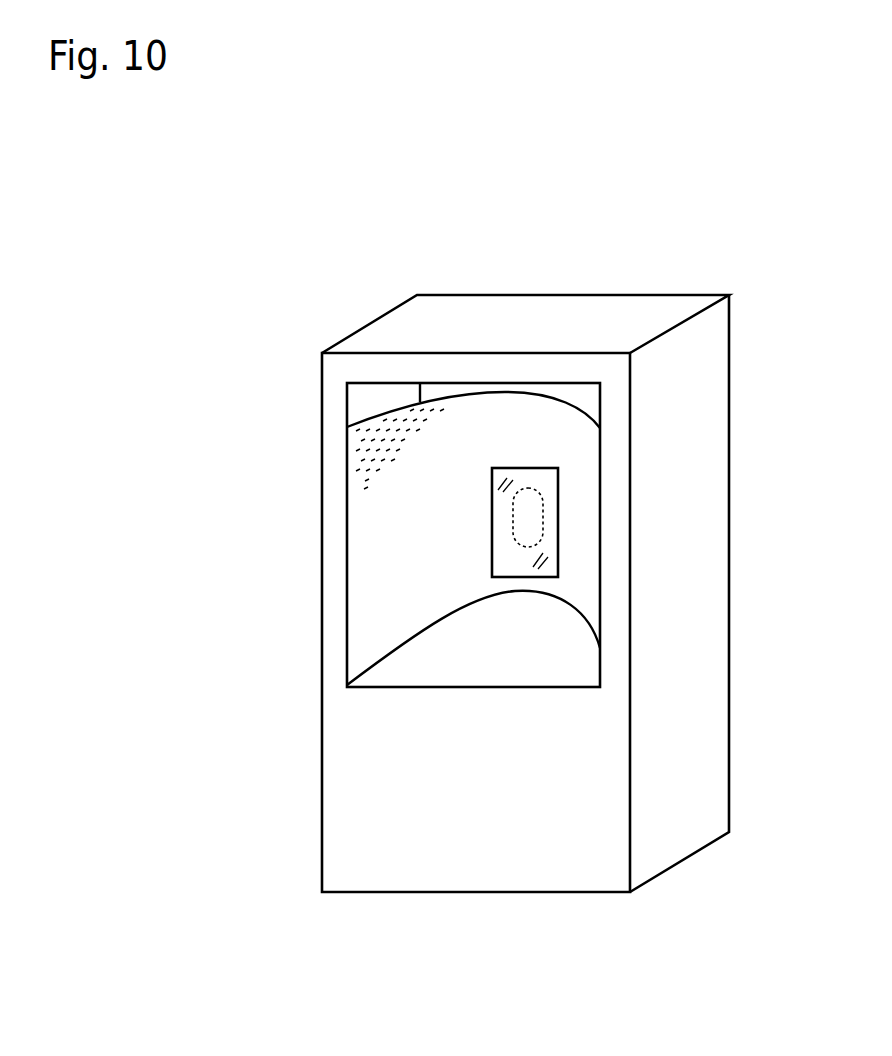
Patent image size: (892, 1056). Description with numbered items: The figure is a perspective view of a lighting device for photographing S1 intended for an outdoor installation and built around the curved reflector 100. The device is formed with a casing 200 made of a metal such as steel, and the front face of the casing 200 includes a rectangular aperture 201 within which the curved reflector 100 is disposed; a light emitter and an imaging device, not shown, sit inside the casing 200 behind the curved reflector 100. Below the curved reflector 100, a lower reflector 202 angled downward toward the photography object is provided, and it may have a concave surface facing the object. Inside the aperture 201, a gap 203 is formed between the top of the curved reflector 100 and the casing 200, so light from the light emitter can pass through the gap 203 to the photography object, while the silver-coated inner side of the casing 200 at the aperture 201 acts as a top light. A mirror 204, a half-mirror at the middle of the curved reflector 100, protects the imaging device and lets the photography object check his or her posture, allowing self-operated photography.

The lighting device for photographing S1 is at (347, 300).
The casing 200 is at (537, 313).
The curved reflector 100 is at (368, 588).
The aperture 201 is at (363, 507).
The lower reflector 202 is at (440, 667).
The gap 203 is at (367, 402).
The mirror 204 is at (558, 526).